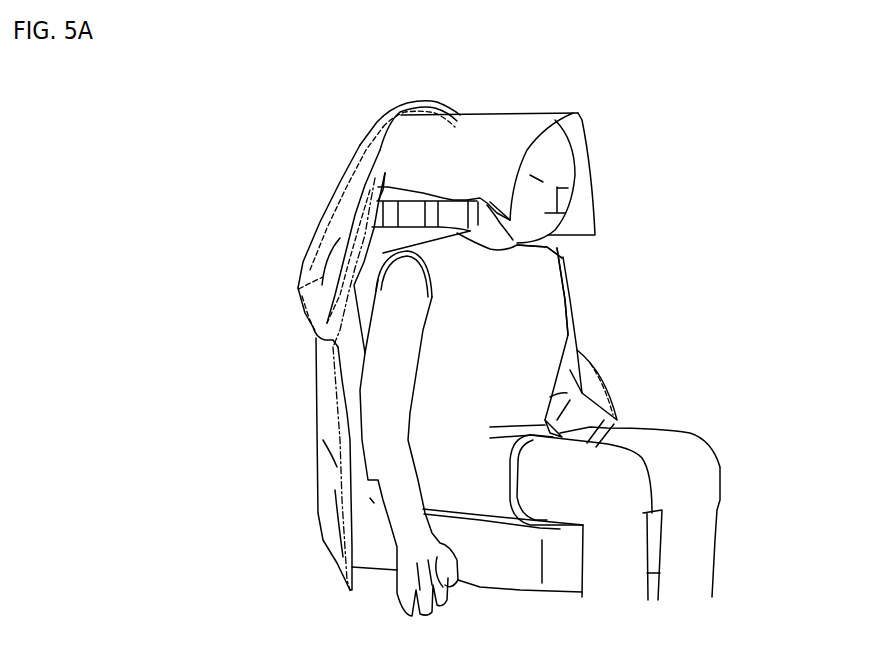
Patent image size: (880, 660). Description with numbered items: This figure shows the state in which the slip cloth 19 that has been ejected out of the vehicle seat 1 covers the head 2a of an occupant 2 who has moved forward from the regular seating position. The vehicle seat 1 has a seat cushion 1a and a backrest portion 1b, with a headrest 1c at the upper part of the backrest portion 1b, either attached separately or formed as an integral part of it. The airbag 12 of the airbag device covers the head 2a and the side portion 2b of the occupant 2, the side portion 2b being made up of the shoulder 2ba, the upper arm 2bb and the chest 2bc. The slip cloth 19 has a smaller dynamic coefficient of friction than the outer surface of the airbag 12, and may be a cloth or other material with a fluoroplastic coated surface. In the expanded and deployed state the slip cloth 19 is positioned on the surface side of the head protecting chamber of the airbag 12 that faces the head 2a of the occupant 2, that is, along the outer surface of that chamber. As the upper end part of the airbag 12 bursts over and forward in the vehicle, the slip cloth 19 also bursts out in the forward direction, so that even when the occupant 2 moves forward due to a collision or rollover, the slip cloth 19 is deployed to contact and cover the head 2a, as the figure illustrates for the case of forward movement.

The vehicle seat 1 is at (385, 577).
The seat cushion 1a is at (508, 570).
The backrest portion 1b is at (355, 362).
The headrest 1c is at (393, 190).
The airbag 12 is at (308, 400).
The slip cloth 19 is at (503, 125).
The occupant 2 is at (722, 168).
The head 2a is at (556, 146).
The side portion 2b is at (676, 226).
The shoulder 2ba is at (547, 248).
The upper arm 2bb is at (575, 310).
The chest 2bc is at (530, 317).